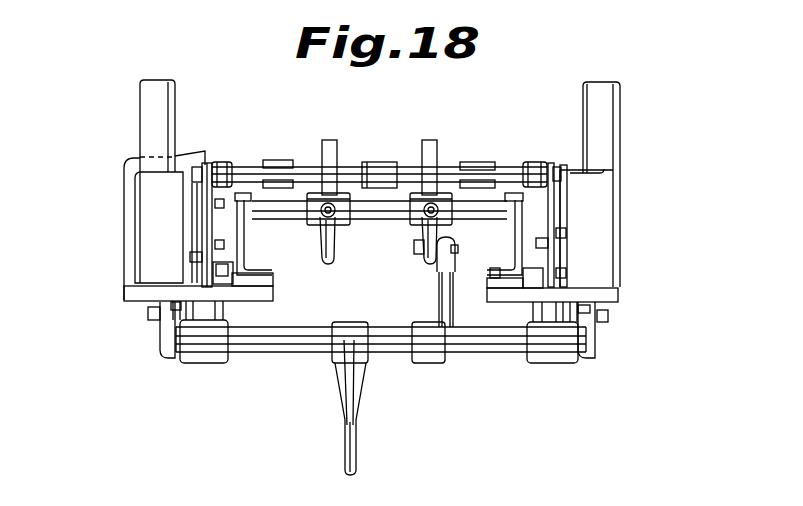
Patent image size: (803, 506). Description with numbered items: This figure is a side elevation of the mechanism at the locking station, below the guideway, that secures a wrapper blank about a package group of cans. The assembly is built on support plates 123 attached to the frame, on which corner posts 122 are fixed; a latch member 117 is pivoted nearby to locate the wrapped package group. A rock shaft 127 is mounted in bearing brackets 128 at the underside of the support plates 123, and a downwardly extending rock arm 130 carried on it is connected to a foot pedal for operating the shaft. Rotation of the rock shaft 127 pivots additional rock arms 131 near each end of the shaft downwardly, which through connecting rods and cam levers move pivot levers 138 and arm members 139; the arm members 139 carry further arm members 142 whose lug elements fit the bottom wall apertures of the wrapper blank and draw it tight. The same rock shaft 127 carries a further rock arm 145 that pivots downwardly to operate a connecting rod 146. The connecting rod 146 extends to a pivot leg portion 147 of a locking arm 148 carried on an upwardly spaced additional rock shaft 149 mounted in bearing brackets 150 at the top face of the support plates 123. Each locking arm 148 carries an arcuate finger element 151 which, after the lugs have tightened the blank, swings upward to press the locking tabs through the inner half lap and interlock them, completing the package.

The latch member 117 is at (125, 229).
The corner post 122 is at (146, 103).
The support plate 123 is at (146, 297).
The rock shaft 127 is at (274, 353).
The bearing bracket 128 is at (176, 357).
The rock arm 130 is at (355, 397).
The additional rock arm 131 is at (212, 363).
The pivot lever 138 is at (203, 161).
The arm member 139 is at (218, 162).
The further arm member 142 is at (272, 161).
The further rock arm 145 is at (436, 364).
The connecting rod 146 is at (438, 296).
The pivot leg portion 147 is at (419, 231).
The locking arm 148 is at (316, 227).
The additional rock shaft 149 is at (286, 219).
The bearing bracket 150 is at (273, 286).
The arcuate finger element 151 is at (329, 140).